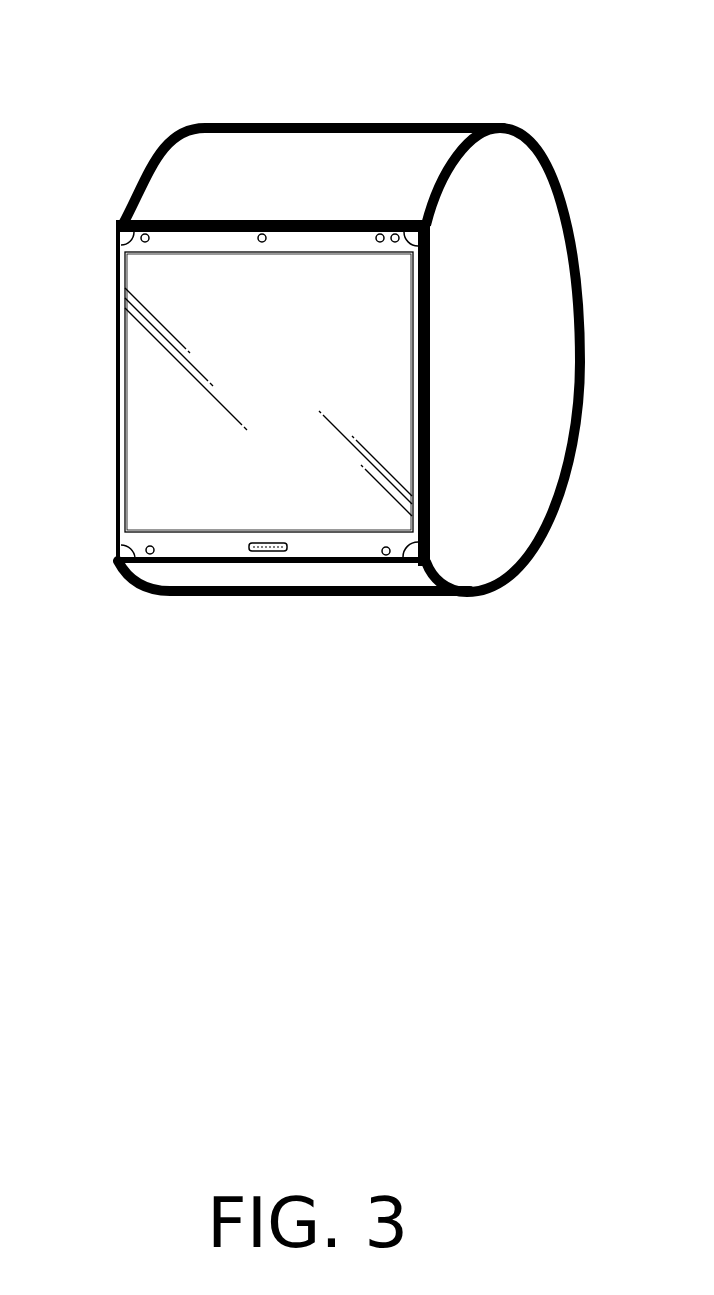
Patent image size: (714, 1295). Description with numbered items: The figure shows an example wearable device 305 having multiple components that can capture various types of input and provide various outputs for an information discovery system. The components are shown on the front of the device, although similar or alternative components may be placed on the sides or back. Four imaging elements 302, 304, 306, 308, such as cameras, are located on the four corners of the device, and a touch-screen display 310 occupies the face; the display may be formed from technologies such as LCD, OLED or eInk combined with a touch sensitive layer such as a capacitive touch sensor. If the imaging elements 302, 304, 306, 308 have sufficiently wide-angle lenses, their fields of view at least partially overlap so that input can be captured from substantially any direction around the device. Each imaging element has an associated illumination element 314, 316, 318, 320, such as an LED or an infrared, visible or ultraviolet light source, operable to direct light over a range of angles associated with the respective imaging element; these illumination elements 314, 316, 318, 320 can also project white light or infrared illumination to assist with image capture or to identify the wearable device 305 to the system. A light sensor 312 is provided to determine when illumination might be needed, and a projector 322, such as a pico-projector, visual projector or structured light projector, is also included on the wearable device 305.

The imaging element 302 is at (120, 229).
The imaging element 304 is at (431, 226).
The wearable device 305 is at (657, 117).
The imaging element 306 is at (418, 566).
The imaging element 308 is at (123, 563).
The touch-screen display 310 is at (140, 406).
The light sensor 312 is at (347, 222).
The illumination element 314 is at (160, 225).
The illumination element 316 is at (390, 221).
The illumination element 318 is at (386, 556).
The illumination element 320 is at (151, 555).
The projector 322 is at (263, 227).